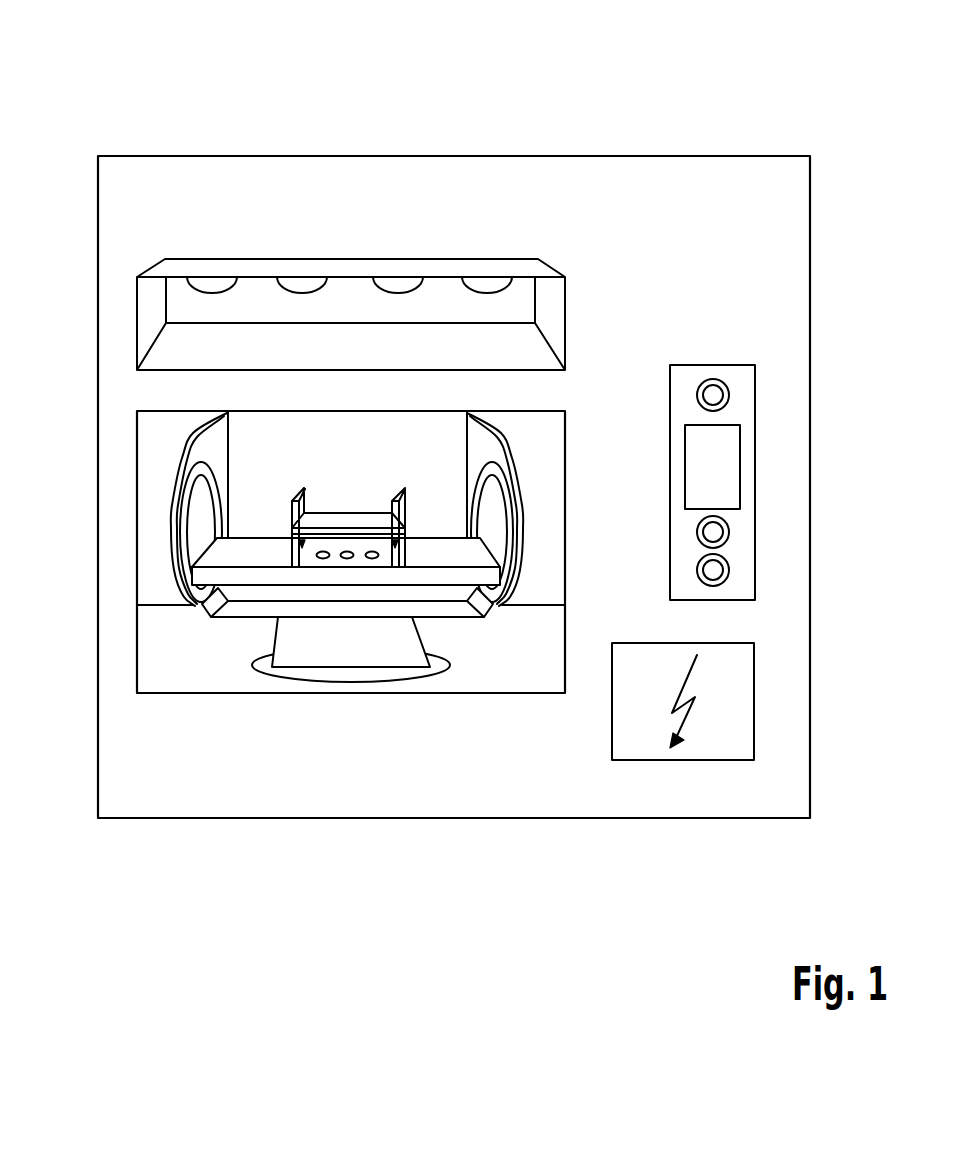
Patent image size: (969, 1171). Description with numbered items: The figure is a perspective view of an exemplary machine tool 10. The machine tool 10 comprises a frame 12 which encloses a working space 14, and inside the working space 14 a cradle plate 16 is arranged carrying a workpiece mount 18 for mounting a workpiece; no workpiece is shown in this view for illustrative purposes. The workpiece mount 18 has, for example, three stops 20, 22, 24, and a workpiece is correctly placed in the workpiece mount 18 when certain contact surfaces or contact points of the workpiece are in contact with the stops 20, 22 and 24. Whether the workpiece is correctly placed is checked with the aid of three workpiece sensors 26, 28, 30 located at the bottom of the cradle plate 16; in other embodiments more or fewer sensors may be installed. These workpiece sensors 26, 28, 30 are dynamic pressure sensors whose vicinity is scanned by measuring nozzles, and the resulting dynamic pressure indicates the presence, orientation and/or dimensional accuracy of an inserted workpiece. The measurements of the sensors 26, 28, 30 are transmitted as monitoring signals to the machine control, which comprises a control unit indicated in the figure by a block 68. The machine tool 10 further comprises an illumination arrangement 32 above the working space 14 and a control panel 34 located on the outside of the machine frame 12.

The machine tool 10 is at (457, 453).
The frame 12 is at (762, 793).
The working space 14 is at (260, 440).
The cradle plate 16 is at (450, 575).
The workpiece mount 18 is at (290, 513).
The stop 20 is at (303, 540).
The stop 22 is at (310, 557).
The stop 24 is at (397, 545).
The workpiece sensor 26 is at (323, 558).
The workpiece sensor 28 is at (347, 558).
The workpiece sensor 30 is at (372, 558).
The illumination arrangement 32 is at (300, 285).
The control panel 34 is at (733, 412).
The control unit 68 is at (689, 750).